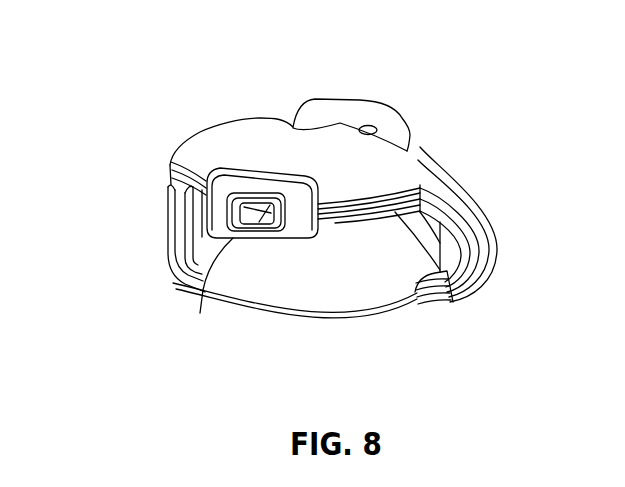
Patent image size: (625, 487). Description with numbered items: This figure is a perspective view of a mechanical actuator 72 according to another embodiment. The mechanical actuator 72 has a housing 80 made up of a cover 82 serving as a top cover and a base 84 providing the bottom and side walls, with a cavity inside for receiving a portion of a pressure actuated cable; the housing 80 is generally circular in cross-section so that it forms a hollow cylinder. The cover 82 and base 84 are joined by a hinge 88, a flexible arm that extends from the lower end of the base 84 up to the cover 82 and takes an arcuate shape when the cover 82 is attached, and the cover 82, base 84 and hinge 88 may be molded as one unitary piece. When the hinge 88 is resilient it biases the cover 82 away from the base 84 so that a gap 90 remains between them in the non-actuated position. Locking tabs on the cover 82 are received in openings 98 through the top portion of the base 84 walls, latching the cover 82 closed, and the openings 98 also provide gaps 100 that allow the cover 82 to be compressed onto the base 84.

The mechanical actuator 72 is at (79, 331).
The housing 80 is at (278, 68).
The cover 82 is at (413, 163).
The base 84 is at (317, 290).
The hinge 88 is at (487, 237).
The gap 90 is at (452, 302).
The openings 98 is at (290, 233).
The gaps 100 is at (204, 293).